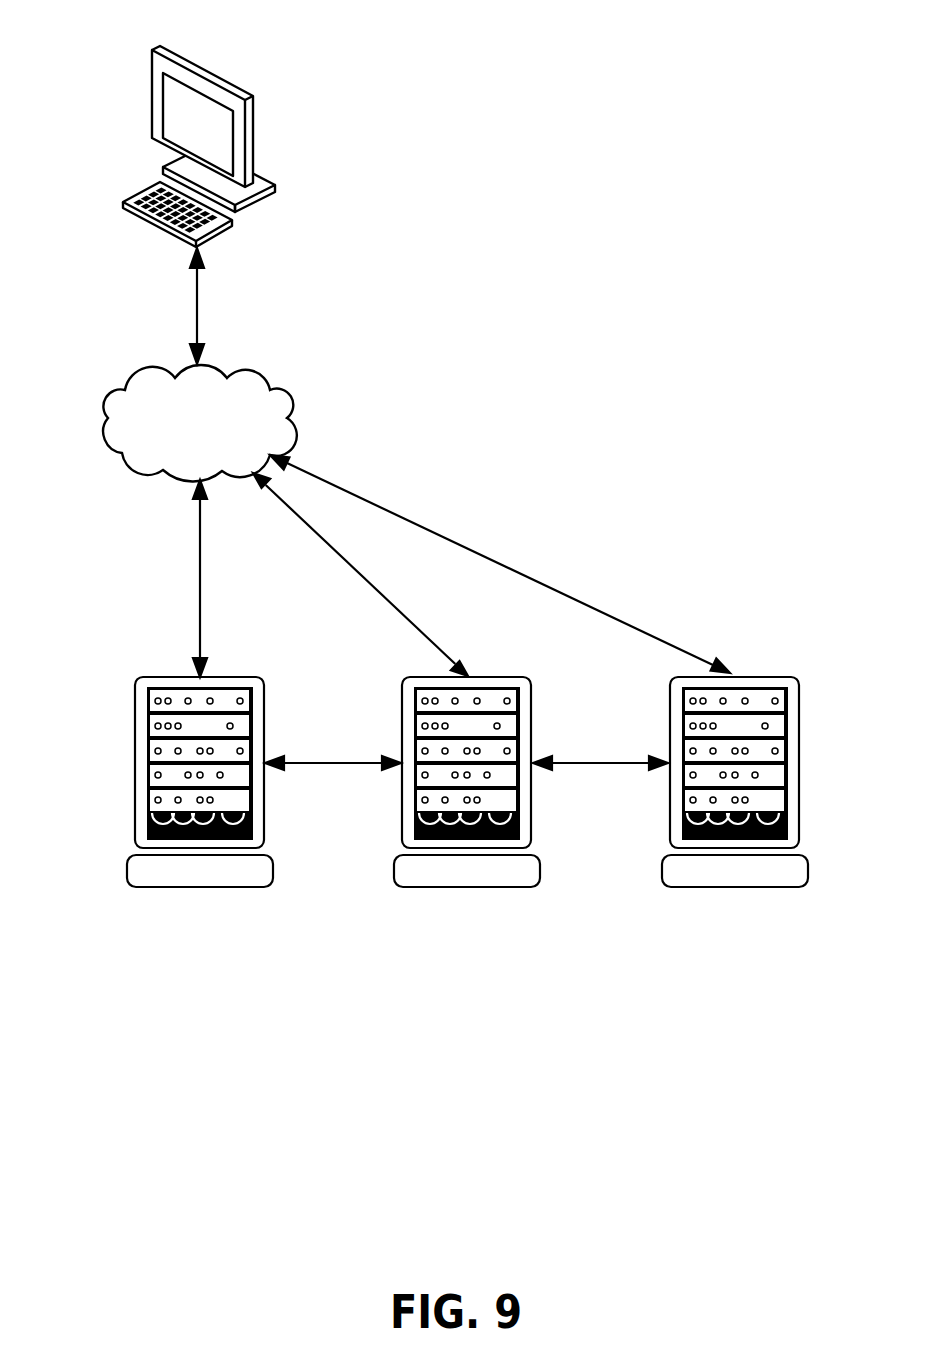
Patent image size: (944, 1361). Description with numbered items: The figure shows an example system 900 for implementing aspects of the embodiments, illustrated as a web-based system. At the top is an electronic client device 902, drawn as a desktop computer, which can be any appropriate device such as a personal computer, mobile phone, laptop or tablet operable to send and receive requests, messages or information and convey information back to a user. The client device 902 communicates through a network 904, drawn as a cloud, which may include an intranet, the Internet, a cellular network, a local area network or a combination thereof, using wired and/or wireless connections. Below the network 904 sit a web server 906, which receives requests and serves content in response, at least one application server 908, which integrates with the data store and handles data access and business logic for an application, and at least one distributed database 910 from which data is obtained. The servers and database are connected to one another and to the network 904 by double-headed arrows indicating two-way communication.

The system 900 is at (748, 318).
The electronic client device 902 is at (193, 68).
The network 904 is at (297, 388).
The web server 906 is at (135, 763).
The application server 908 is at (513, 676).
The distributed database 910 is at (776, 676).